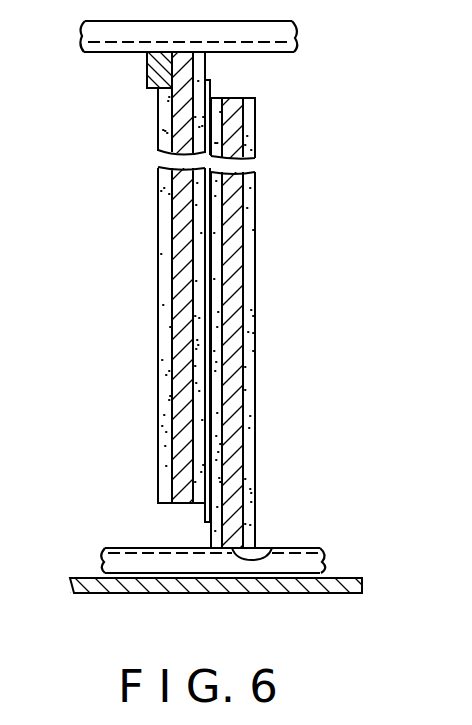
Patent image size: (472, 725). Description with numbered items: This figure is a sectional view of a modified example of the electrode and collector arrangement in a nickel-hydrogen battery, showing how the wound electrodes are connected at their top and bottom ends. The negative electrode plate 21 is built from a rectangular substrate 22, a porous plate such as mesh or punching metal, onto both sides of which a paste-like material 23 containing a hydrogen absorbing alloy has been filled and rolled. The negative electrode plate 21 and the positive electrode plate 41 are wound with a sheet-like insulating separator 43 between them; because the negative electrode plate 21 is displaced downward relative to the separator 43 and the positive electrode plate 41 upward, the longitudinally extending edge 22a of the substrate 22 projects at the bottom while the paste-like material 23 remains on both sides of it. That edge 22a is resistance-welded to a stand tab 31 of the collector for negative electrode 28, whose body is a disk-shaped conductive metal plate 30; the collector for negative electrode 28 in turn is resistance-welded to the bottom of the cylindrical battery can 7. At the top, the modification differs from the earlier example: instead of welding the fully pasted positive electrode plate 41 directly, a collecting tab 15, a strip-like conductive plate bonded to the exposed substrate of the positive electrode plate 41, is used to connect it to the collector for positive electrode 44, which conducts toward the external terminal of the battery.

The cylindrical battery can 7 is at (350, 585).
The collecting tab 15 is at (148, 67).
The negative electrode plate 21 is at (278, 323).
The substrate 22 is at (233, 188).
The paste-like material 23 is at (250, 272).
The longitudinally extending edge 22a is at (270, 548).
The collector for negative electrode 28 is at (230, 523).
The conductive metal plate 30 is at (310, 565).
The stand tab 31 is at (310, 548).
The positive electrode plate 41 is at (147, 216).
The separator 43 is at (197, 513).
The collector for positive electrode 44 is at (285, 33).